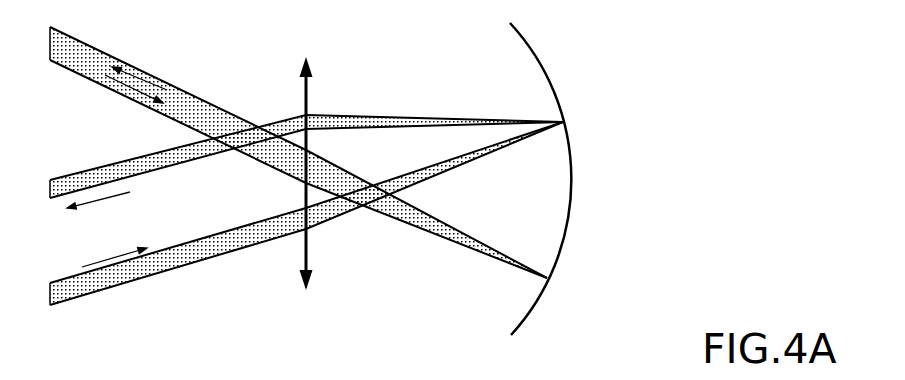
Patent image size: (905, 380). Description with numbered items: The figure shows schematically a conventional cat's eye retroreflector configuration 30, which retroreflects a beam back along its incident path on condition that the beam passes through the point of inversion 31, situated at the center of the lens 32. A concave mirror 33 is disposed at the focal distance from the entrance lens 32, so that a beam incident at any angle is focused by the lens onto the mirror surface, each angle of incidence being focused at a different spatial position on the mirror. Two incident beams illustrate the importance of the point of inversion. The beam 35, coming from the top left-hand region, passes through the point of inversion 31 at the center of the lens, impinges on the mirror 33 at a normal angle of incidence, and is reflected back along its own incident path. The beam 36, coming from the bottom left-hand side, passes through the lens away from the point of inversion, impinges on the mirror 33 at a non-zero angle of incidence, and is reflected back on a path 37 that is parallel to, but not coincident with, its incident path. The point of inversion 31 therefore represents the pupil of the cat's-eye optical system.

The cat's eye retroreflector configuration 30 is at (667, 85).
The point of inversion 31 is at (303, 165).
The lens 32 is at (307, 289).
The concave mirror 33 is at (527, 323).
The beam 35 is at (132, 99).
The beam 36 is at (90, 295).
The path 37 is at (60, 198).